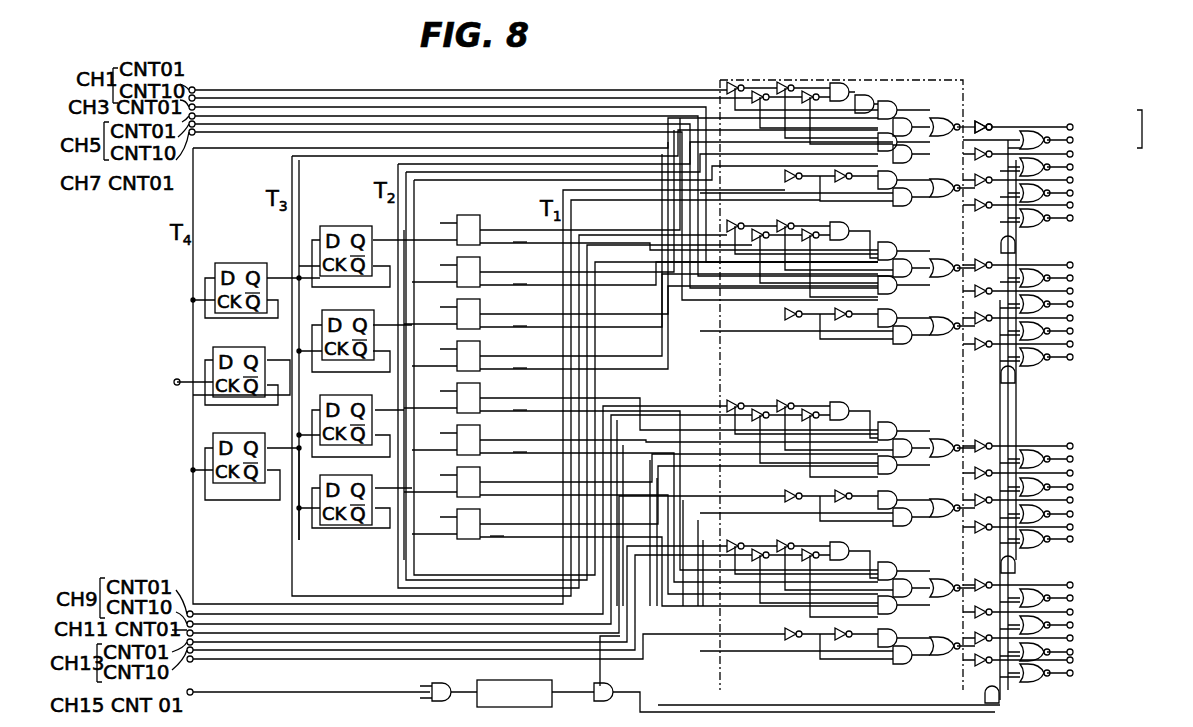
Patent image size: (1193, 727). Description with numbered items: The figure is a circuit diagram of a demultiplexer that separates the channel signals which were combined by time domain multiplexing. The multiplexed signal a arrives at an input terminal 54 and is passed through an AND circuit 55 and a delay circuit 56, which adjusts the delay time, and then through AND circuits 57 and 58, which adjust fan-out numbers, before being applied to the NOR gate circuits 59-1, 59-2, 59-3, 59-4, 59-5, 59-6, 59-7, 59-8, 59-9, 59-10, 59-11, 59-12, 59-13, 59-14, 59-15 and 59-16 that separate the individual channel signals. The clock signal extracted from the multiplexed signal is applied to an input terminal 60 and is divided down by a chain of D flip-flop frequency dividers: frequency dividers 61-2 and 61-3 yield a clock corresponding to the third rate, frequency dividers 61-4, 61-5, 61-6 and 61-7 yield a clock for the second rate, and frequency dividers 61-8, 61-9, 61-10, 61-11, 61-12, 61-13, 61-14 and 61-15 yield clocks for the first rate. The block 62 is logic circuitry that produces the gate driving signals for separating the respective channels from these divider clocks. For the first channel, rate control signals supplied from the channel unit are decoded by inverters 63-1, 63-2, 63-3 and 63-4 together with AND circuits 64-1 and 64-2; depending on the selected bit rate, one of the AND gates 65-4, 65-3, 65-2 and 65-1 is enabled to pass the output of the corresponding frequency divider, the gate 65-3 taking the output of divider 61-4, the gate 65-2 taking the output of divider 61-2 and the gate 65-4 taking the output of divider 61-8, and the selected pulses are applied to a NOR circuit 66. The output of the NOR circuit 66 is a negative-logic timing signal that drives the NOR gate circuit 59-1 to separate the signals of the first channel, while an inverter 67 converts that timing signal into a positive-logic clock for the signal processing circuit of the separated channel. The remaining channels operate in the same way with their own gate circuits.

The input terminal 54 is at (190, 696).
The AND circuit 55 is at (436, 684).
The delay circuit 56 is at (484, 680).
The AND circuit 57 is at (612, 672).
The AND circuit 58 is at (1016, 244).
The NOR gate circuit 59-1 is at (1030, 130).
The NOR gate circuit 59-2 is at (1067, 162).
The NOR gate circuit 59-3 is at (1067, 188).
The NOR gate circuit 59-4 is at (1067, 213).
The NOR gate circuit 59-5 is at (1067, 273).
The NOR gate circuit 59-6 is at (1067, 299).
The NOR gate circuit 59-7 is at (1067, 326).
The NOR gate circuit 59-8 is at (1067, 352).
The NOR gate circuit 59-9 is at (1070, 454).
The NOR gate circuit 59-10 is at (1078, 481).
The NOR gate circuit 59-11 is at (1078, 508).
The NOR gate circuit 59-12 is at (1078, 534).
The NOR gate circuit 59-13 is at (1078, 593).
The NOR gate circuit 59-14 is at (1078, 620).
The NOR gate circuit 59-15 is at (1078, 646).
The NOR gate circuit 59-16 is at (1078, 668).
The input terminal 60 is at (176, 386).
The frequency divider 61-2 is at (235, 262).
The frequency divider 61-3 is at (245, 486).
The frequency divider 61-4 is at (345, 226).
The frequency divider 61-5 is at (326, 304).
The frequency divider 61-6 is at (325, 392).
The frequency divider 61-7 is at (340, 526).
The frequency divider 61-8 is at (495, 218).
The frequency divider 61-9 is at (484, 266).
The frequency divider 61-10 is at (484, 308).
The frequency divider 61-11 is at (484, 350).
The frequency divider 61-12 is at (484, 392).
The frequency divider 61-13 is at (484, 434).
The frequency divider 61-14 is at (484, 476).
The frequency divider 61-15 is at (484, 518).
The block of logic circuitry 62 is at (718, 106).
The inverter 63-1 is at (730, 85).
The inverter 63-2 is at (756, 92).
The inverter 63-3 is at (781, 84).
The inverter 63-4 is at (807, 92).
The AND circuit 64-1 is at (848, 84).
The AND circuit 64-2 is at (873, 100).
The AND gate 65-1 is at (240, 397).
The AND gate 65-2 is at (910, 122).
The AND gate 65-3 is at (897, 135).
The AND gate 65-4 is at (912, 150).
The NOR circuit 66 is at (945, 140).
The inverter 67 is at (985, 122).